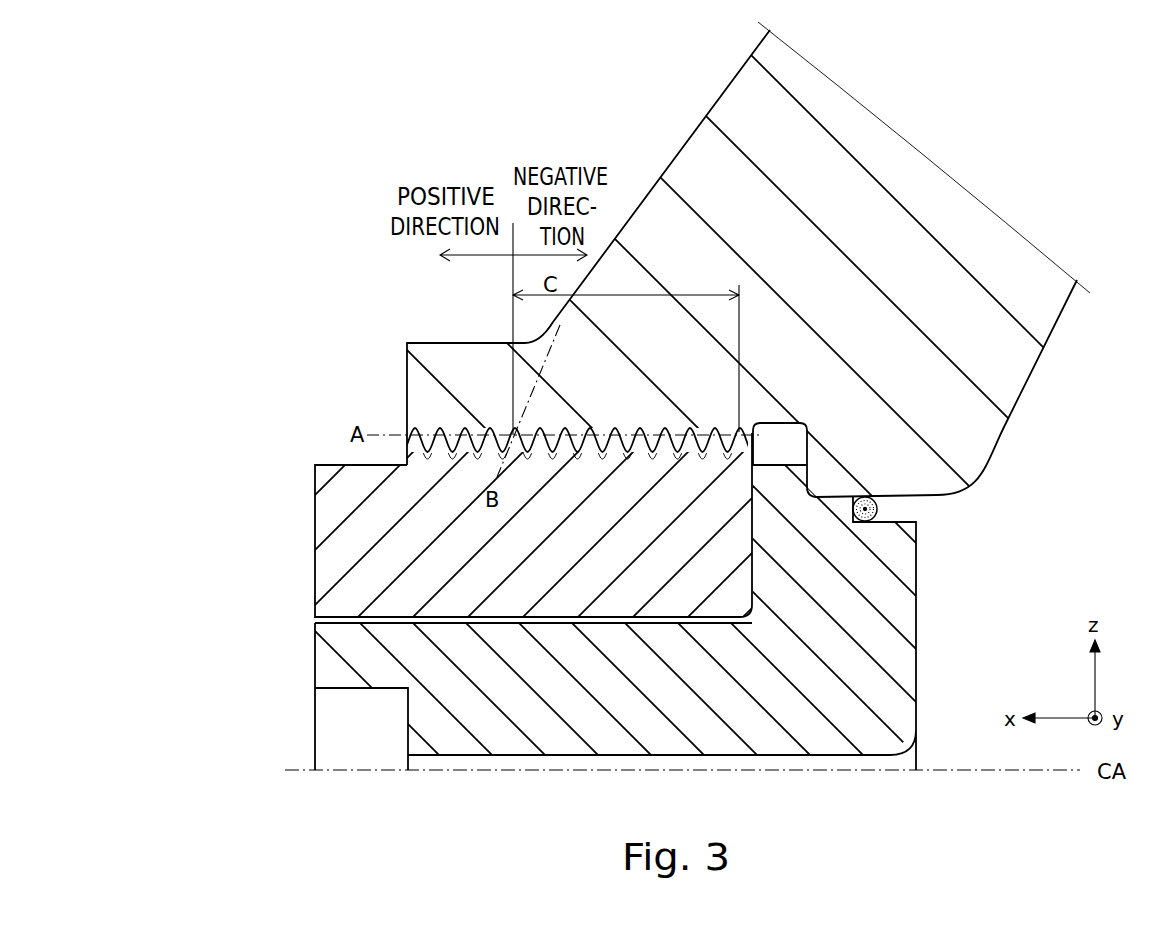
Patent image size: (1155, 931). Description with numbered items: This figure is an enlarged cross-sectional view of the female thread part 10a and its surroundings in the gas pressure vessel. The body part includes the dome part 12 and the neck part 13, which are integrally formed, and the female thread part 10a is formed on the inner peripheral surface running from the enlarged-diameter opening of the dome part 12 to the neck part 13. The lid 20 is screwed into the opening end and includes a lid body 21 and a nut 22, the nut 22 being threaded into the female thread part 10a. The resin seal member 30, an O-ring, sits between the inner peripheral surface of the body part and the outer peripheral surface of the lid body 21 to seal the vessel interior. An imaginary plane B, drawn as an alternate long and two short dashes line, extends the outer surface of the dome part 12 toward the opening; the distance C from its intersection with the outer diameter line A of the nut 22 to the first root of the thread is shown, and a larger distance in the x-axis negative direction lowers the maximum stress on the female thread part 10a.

The dome part 12 is at (688, 152).
The neck part 13 is at (407, 378).
The female thread part 10a is at (428, 440).
The lid 20 is at (638, 601).
The lid body 21 is at (248, 568).
The nut 22 is at (315, 580).
The resin seal member 30 is at (878, 508).